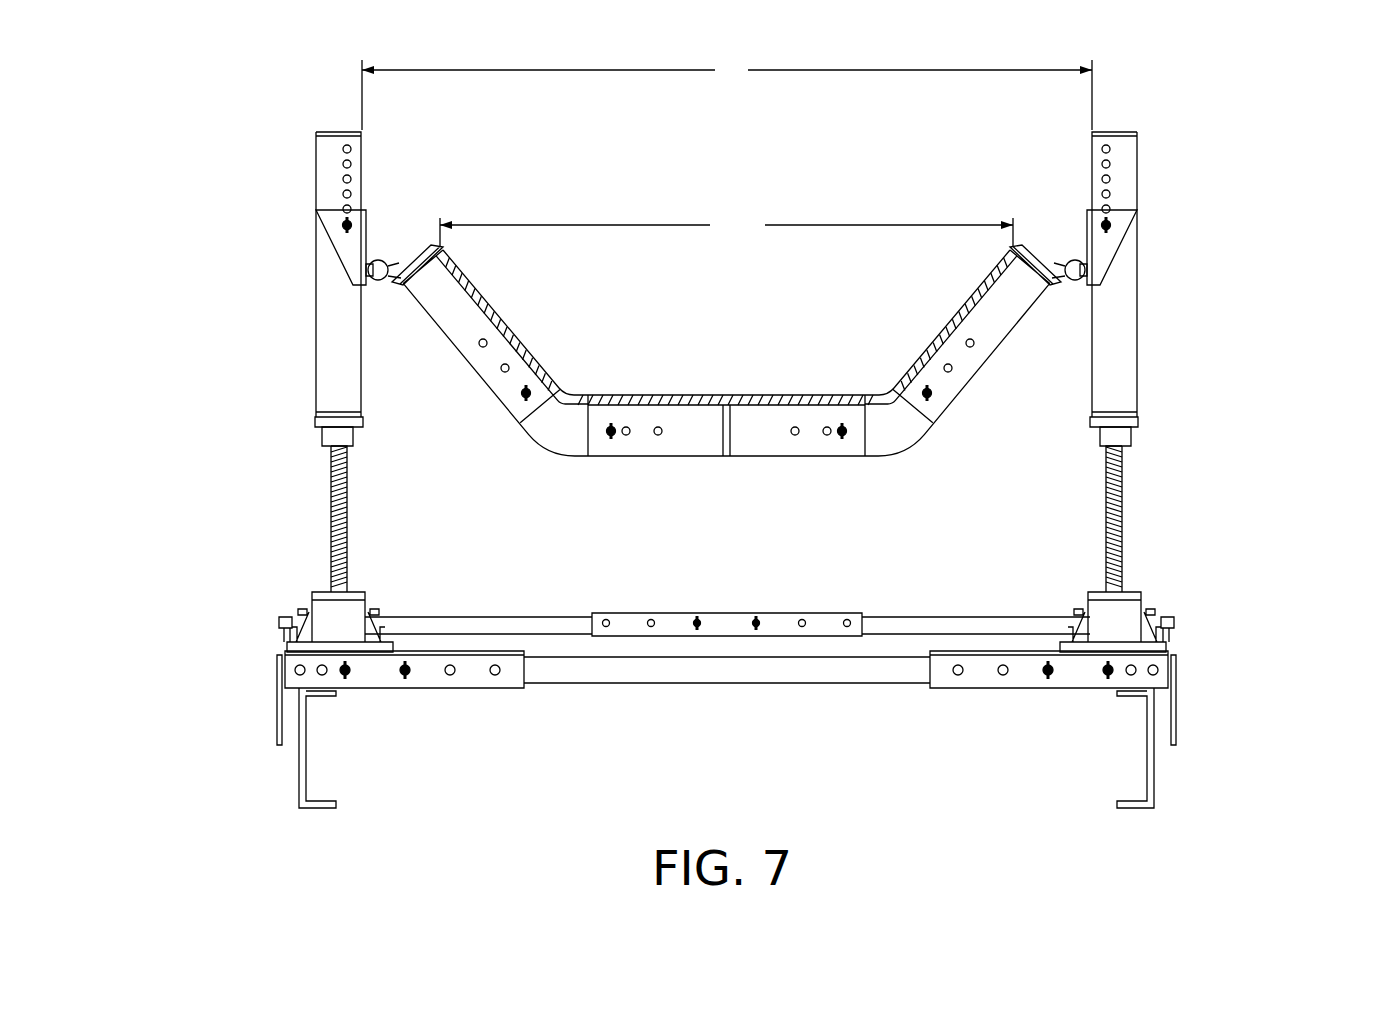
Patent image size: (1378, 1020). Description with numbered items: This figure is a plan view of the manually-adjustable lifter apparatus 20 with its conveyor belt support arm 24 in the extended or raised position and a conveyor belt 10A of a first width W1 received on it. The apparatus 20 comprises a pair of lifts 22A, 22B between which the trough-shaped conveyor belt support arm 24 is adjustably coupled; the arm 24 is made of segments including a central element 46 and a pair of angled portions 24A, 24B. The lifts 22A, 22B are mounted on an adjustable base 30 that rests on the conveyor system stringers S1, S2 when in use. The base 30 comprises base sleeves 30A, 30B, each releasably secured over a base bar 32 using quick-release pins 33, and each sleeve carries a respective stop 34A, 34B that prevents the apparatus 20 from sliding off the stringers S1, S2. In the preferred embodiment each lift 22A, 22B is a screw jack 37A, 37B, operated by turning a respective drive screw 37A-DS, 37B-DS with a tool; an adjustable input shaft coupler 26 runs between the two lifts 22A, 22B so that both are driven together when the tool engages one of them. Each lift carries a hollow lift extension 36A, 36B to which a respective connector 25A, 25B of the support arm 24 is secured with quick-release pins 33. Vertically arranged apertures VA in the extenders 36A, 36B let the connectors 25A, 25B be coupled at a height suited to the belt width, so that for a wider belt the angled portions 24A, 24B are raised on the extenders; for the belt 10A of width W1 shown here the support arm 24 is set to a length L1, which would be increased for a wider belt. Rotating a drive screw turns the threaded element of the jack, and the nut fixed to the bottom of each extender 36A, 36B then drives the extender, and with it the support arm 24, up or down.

The adjustable lifter apparatus 20 is at (1274, 133).
The lift 22A is at (303, 450).
The lift 22B is at (1154, 380).
The conveyor belt support arm 24 is at (898, 466).
The angled portion 24A is at (442, 363).
The angled portion 24B is at (1027, 338).
The connector 25A is at (343, 244).
The connector 25B is at (1110, 244).
The input shaft coupler 26 is at (540, 605).
The adjustable base 30 is at (675, 697).
The base sleeve 30A is at (578, 699).
The base sleeve 30B is at (1020, 665).
The base bar 32 is at (797, 672).
The quick-release pin 33 is at (1112, 226).
The stop 34A is at (279, 688).
The stop 34B is at (1178, 713).
The lift extension 36A is at (343, 359).
The lift extension 36B is at (1114, 348).
The screw jack 37A is at (332, 613).
The screw jack 37B is at (1115, 613).
The drive screw 37A-DS is at (278, 623).
The drive screw 37B-DS is at (1172, 626).
The central element 46 is at (727, 437).
The conveyor belt 10A is at (722, 400).
The apertures VA is at (353, 149).
The stringer S1 is at (298, 775).
The stringer S2 is at (1157, 775).
The length L1 is at (727, 94).
The first width W1 is at (726, 229).